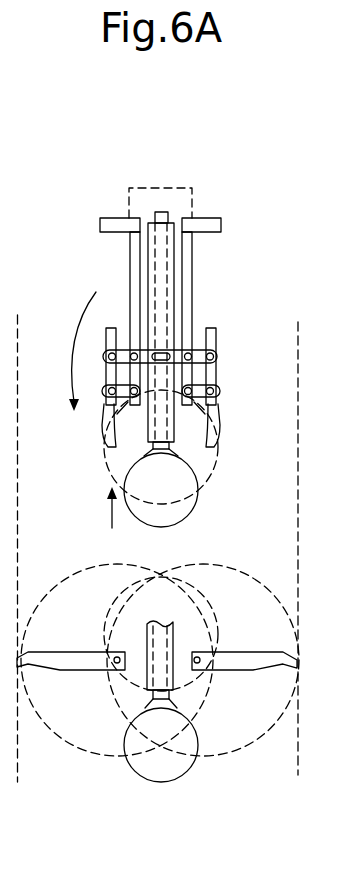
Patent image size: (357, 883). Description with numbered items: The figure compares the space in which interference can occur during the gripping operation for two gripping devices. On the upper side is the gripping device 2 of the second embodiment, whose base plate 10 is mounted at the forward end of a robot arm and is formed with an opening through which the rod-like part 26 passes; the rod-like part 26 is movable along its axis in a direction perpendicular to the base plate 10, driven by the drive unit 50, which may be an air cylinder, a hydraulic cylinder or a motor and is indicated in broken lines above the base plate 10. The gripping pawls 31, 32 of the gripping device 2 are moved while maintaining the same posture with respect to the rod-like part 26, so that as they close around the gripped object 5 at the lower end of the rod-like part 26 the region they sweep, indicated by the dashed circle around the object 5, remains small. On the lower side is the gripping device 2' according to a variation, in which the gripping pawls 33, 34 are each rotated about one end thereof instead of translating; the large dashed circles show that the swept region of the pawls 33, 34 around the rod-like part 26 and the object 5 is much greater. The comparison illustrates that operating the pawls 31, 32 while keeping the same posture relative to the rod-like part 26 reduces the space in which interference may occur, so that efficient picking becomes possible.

The drive unit 50 is at (160, 187).
The base plate 10 is at (205, 221).
The gripping device 2 is at (180, 380).
The gripping device according to a variation 2' is at (183, 646).
The rod-like part 26 is at (174, 276).
The gripping pawl 31 is at (105, 407).
The gripping pawl 32 is at (213, 406).
The gripping pawl 33 is at (72, 657).
The gripping pawl 34 is at (245, 658).
The ball 5 is at (188, 507).